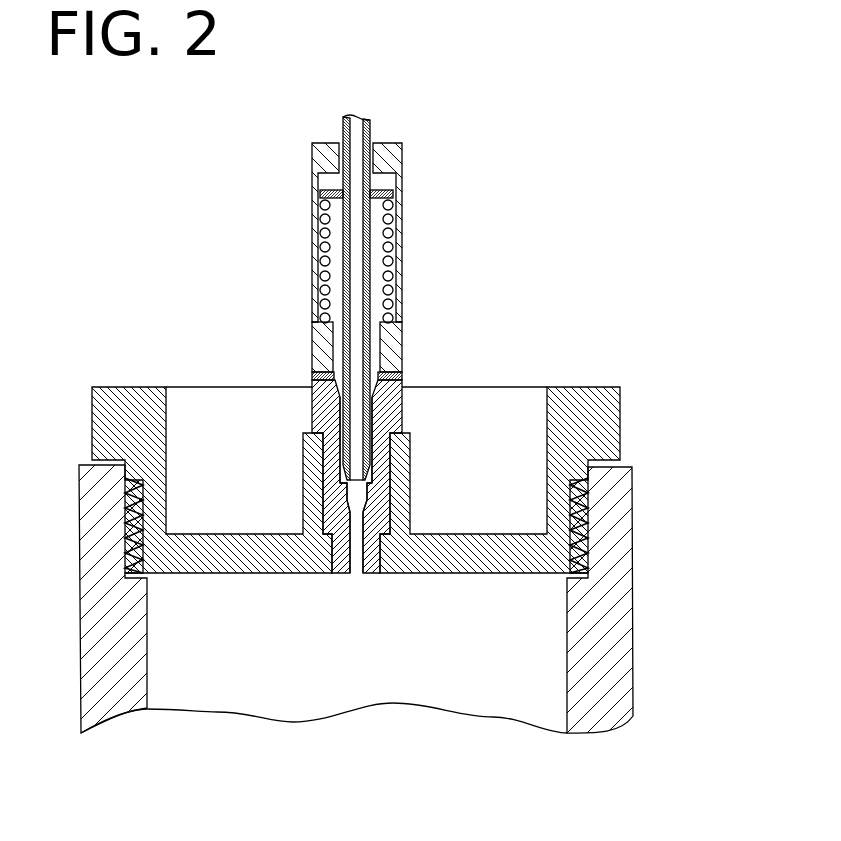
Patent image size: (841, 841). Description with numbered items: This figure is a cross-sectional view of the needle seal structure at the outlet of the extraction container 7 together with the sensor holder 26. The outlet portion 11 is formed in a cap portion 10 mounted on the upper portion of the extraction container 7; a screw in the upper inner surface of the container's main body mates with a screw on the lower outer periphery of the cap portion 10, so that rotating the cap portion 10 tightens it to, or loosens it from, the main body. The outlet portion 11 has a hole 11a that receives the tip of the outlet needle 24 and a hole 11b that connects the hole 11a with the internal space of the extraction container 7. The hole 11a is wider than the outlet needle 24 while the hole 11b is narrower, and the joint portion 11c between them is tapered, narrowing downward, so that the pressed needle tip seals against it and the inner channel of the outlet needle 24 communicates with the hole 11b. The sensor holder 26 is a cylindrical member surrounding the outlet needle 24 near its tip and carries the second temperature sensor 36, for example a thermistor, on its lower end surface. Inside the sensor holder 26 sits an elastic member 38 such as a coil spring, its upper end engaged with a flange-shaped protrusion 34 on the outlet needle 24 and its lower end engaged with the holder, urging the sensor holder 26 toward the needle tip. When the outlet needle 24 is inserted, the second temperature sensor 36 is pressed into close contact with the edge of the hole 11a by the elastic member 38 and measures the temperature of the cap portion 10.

The extraction container 7 is at (650, 557).
The cap portion 10 is at (608, 423).
The outlet portion 11 is at (403, 408).
The hole 11a is at (377, 423).
The hole 11b is at (357, 555).
The joint portion 11c is at (367, 479).
The outlet needle 24 is at (368, 246).
The sensor holder 26 is at (400, 156).
The flange-shaped protrusion 34 is at (390, 189).
The second temperature sensor 36 is at (400, 370).
The elastic member 38 is at (390, 275).